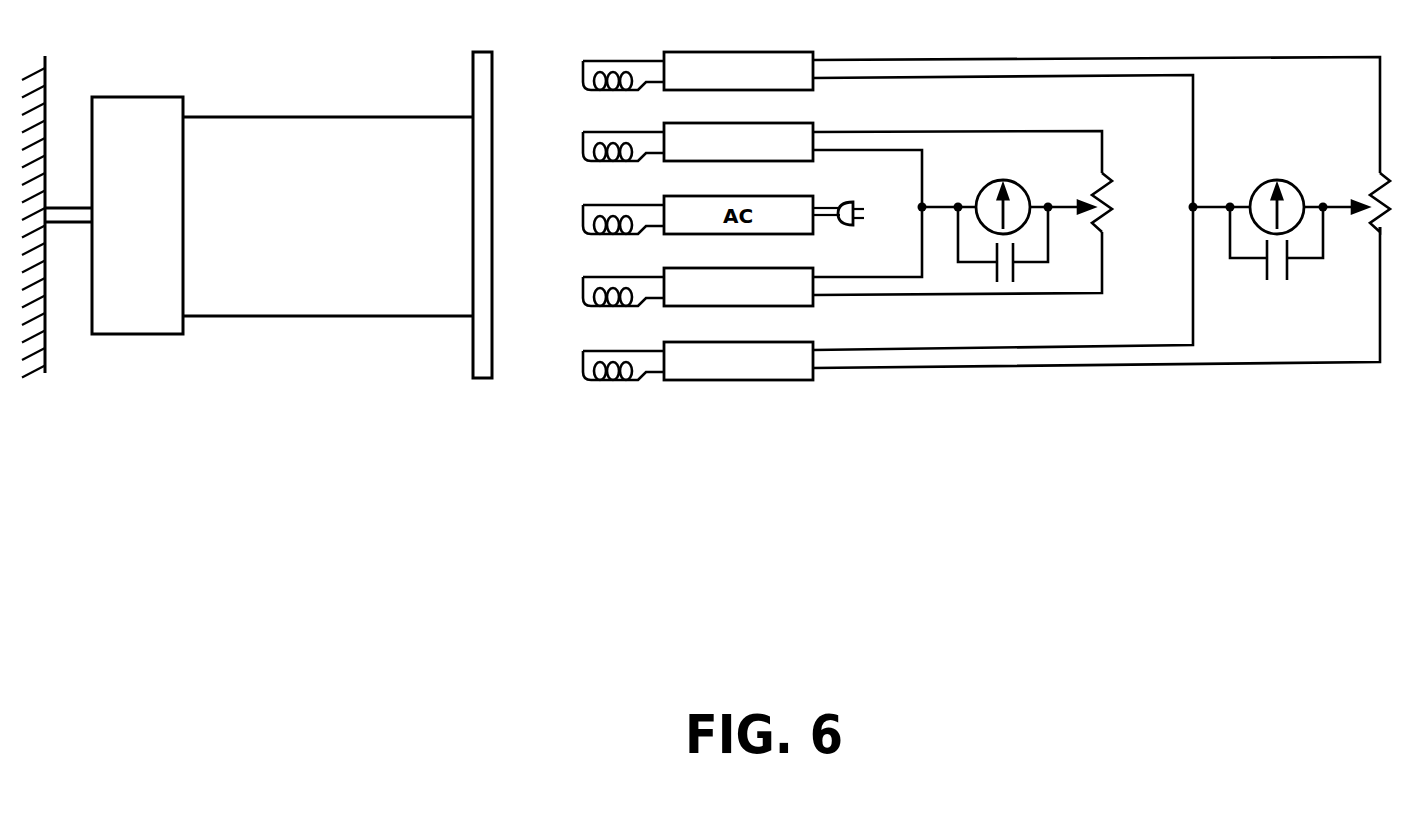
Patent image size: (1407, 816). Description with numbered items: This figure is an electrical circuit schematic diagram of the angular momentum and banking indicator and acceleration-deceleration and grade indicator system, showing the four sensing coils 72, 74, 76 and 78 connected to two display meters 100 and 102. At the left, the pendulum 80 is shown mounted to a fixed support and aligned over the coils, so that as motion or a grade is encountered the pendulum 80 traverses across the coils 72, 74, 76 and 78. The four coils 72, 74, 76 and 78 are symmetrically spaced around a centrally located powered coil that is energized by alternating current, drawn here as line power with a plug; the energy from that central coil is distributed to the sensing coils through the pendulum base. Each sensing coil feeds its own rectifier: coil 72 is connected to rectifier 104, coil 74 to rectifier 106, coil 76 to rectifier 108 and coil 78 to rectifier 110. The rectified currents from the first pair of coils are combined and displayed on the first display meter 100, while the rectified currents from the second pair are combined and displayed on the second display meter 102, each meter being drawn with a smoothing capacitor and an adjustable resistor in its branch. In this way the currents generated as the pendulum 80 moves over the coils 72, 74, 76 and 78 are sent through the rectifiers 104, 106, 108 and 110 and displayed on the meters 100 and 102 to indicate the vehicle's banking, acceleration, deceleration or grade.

The coil 72 is at (583, 61).
The coil 74 is at (583, 132).
The coil 76 is at (583, 277).
The coil 78 is at (583, 351).
The pendulum 80 is at (323, 211).
The display meter 100 is at (1010, 182).
The display meter 102 is at (1285, 180).
The rectifier 104 is at (792, 50).
The rectifier 106 is at (792, 121).
The rectifier 108 is at (792, 266).
The rectifier 110 is at (792, 340).